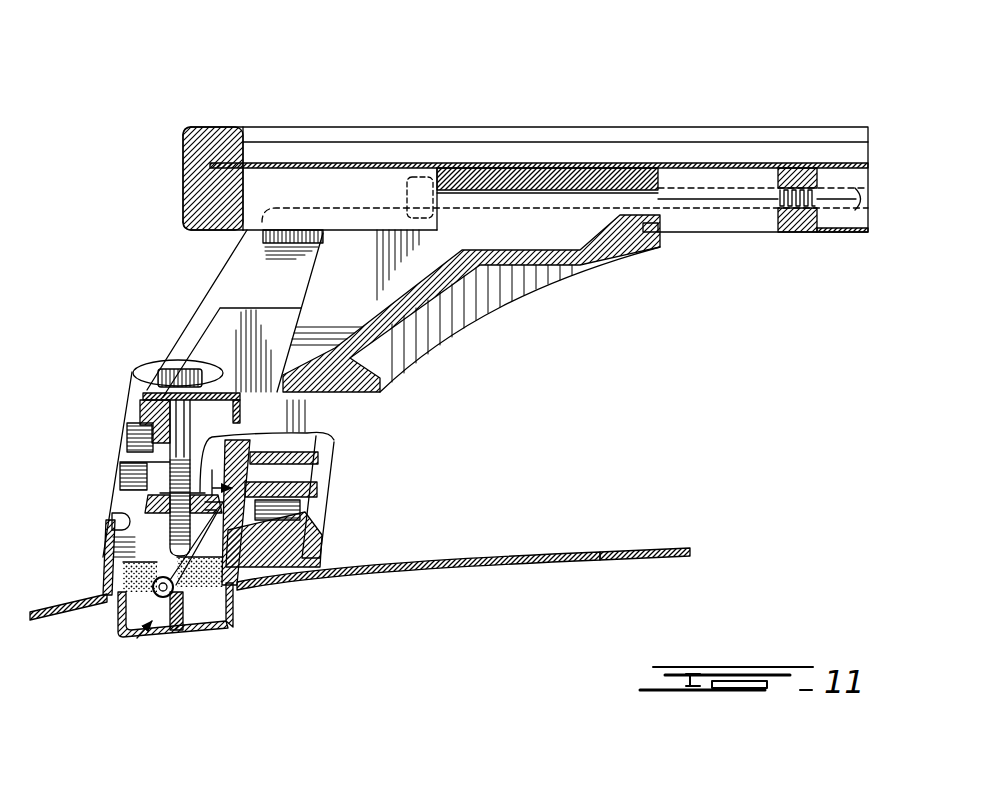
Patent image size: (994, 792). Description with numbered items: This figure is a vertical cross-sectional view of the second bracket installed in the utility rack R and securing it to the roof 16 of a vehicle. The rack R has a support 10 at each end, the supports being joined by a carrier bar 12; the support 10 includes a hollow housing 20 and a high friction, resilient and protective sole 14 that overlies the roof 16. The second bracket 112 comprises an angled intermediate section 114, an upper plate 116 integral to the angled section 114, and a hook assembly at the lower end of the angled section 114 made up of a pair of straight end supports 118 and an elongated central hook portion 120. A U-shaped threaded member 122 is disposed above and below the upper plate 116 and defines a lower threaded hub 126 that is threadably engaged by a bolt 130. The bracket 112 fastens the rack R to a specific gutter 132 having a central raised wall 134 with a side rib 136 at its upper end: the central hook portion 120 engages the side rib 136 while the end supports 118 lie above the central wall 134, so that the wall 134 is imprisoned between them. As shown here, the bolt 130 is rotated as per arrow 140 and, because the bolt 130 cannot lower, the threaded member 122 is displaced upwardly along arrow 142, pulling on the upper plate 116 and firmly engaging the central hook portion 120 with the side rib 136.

The utility rack R is at (468, 108).
The support 10 is at (490, 326).
The carrier bar 12 is at (688, 125).
The sole 14 is at (325, 560).
The roof 16 is at (643, 548).
The hollow housing 20 is at (218, 278).
The second bracket 112 is at (153, 477).
The angled intermediate section 114 is at (275, 525).
The upper plate 116 is at (147, 502).
The straight end supports 118 is at (222, 632).
The central hook portion 120 is at (147, 593).
The threaded member 122 is at (283, 433).
The threaded hub 126 is at (165, 512).
The bolt 130 is at (180, 408).
The gutter 132 is at (140, 643).
The central raised wall 134 is at (180, 632).
The side rib 136 is at (197, 590).
The arrow 140 is at (160, 357).
The arrow 142 is at (285, 478).